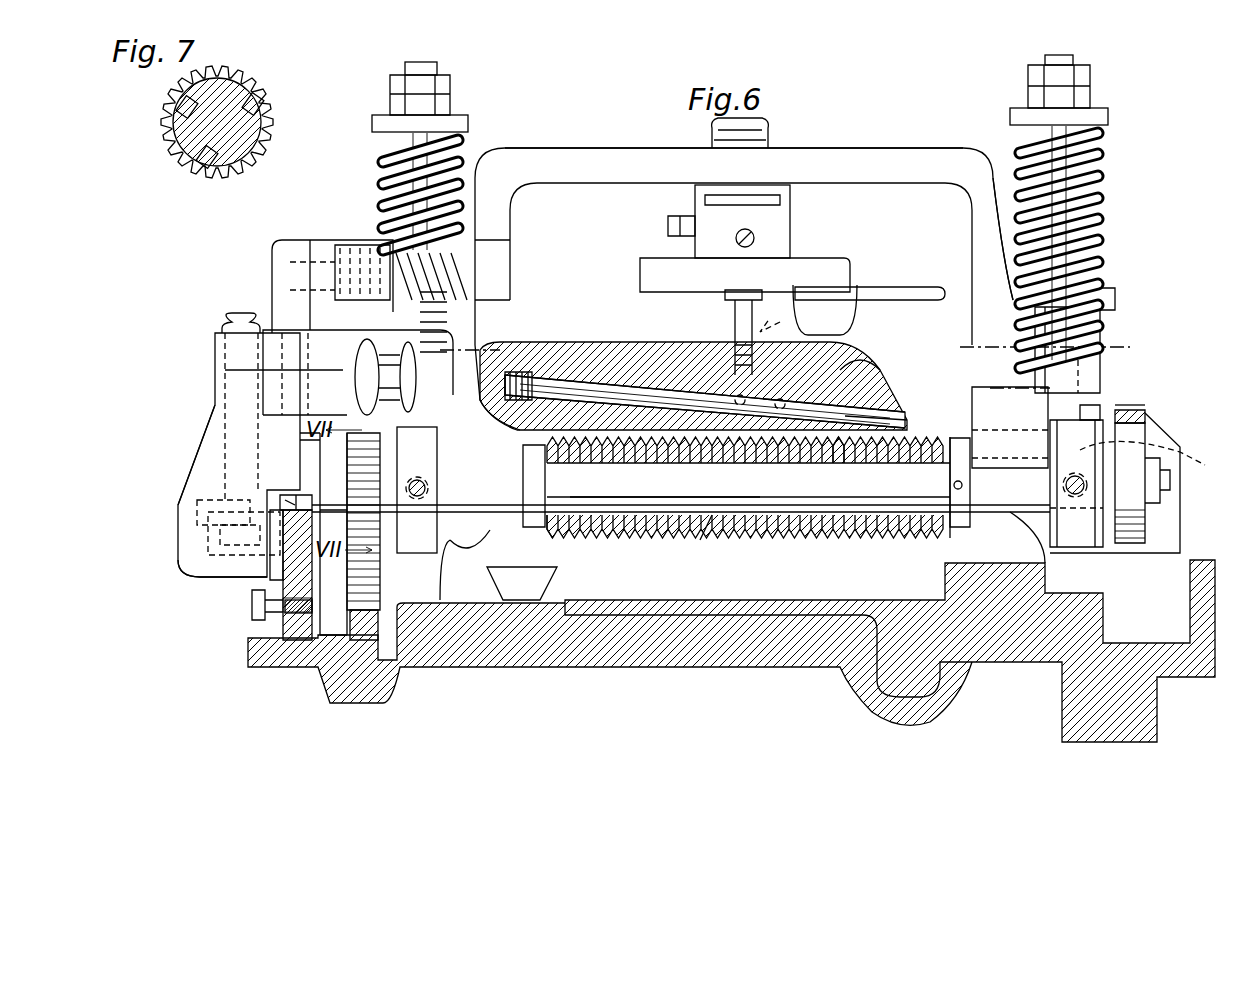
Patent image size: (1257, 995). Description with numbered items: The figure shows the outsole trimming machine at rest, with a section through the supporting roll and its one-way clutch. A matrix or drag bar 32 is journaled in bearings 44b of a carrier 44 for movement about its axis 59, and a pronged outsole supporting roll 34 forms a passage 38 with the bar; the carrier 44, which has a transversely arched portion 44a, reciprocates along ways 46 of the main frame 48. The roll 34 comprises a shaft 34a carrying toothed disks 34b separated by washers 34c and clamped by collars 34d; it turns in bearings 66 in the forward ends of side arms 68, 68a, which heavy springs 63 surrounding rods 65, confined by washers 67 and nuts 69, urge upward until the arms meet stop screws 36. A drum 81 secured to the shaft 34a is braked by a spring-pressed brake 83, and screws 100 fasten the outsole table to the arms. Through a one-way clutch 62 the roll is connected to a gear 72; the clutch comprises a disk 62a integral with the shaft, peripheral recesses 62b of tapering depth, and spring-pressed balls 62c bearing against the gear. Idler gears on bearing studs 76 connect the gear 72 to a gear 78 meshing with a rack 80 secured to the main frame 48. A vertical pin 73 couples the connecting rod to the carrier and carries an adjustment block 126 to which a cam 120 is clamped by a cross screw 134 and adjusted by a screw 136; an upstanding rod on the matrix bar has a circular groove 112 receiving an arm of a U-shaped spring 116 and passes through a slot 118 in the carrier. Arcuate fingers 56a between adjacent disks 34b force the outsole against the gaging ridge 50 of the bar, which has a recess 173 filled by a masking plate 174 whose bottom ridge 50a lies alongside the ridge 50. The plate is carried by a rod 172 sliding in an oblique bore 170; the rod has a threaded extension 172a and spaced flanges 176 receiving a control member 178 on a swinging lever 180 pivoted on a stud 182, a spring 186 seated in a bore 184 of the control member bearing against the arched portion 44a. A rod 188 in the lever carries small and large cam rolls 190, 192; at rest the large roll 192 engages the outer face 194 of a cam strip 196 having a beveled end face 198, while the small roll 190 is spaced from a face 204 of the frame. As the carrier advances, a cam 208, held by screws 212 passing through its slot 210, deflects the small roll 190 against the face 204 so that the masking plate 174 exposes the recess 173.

In FIG. 6, the matrix bar 32 is at (860, 348).
In FIG. 6, the pronged outsole supporting roll 34 is at (891, 556).
In FIG. 6, the shaft 34a is at (926, 490).
In FIG. 6, the toothed disks 34b is at (845, 540).
In FIG. 6, the washers 34c is at (632, 540).
In FIG. 6, the collars 34d is at (978, 528).
In FIG. 6, the stop screws 36 is at (498, 414).
In FIG. 6, the passage 38 is at (880, 416).
In FIG. 6, the carrier 44 is at (528, 320).
In FIG. 6, the transversely arched portion 44a is at (870, 150).
In FIG. 6, the bearings 44b is at (1008, 340).
In FIG. 6, the ways 46 is at (490, 578).
In FIG. 6, the main frame 48 is at (272, 668).
In FIG. 6, the gaging ridge 50 is at (600, 455).
In FIG. 6, the bottom ridge of the masking plate 50a is at (822, 455).
In FIG. 6, the arcuate fingers 56a is at (722, 540).
In FIG. 6, the axis 59 is at (985, 388).
In FIG. 7, the one-way clutch 62 is at (228, 92).
In FIG. 7, the disk 62a is at (232, 172).
In FIG. 7, the peripheral recesses 62b is at (268, 128).
In FIG. 7, the spring-pressed balls 62c is at (260, 104).
In FIG. 6, the heavy springs 63 is at (1090, 230).
In FIG. 6, the rods 65 is at (1090, 182).
In FIG. 6, the bearings 66 is at (1157, 458).
In FIG. 6, the washers 67 is at (1108, 118).
In FIG. 6, the side arm 68 is at (428, 556).
In FIG. 6, the side arm 68a is at (1150, 450).
In FIG. 6, the nuts 69 is at (1070, 100).
In FIG. 7, the gear 72 is at (196, 178).
In FIG. 6, the gear 72 is at (383, 465).
In FIG. 6, the vertical pin 73 is at (772, 128).
In FIG. 6, the bearing studs 76 is at (330, 450).
In FIG. 6, the gear 78 is at (347, 590).
In FIG. 6, the rack 80 is at (350, 616).
In FIG. 6, the drum 81 is at (1150, 520).
In FIG. 6, the spring-pressed brake 83 is at (1145, 418).
In FIG. 6, the screws 100 is at (416, 500).
In FIG. 6, the circular groove 112 is at (752, 292).
In FIG. 6, the U-shaped spring 116 is at (870, 296).
In FIG. 6, the slot 118 is at (790, 320).
In FIG. 6, the cam 120 is at (820, 280).
In FIG. 6, the adjustment block 126 is at (790, 198).
In FIG. 6, the cross screw 134 is at (668, 226).
In FIG. 6, the screw 136 is at (760, 230).
In FIG. 6, the oblique bore 170 is at (600, 385).
In FIG. 6, the rod 172 is at (650, 390).
In FIG. 6, the threaded extension 172a is at (432, 380).
In FIG. 6, the recess 173 is at (880, 372).
In FIG. 6, the masking plate 174 is at (740, 408).
In FIG. 6, the spaced flanges 176 is at (385, 400).
In FIG. 6, the control member 178 is at (330, 318).
In FIG. 6, the swinging lever 180 is at (220, 333).
In FIG. 6, the stud 182 is at (276, 318).
In FIG. 6, the bore 184 is at (345, 260).
In FIG. 6, the spring 186 is at (380, 260).
In FIG. 6, the rod 188 is at (208, 412).
In FIG. 6, the small cam roll 190 is at (210, 535).
In FIG. 6, the large cam roll 192 is at (197, 510).
In FIG. 6, the outer face 194 is at (280, 504).
In FIG. 6, the cam strip 196 is at (302, 494).
In FIG. 6, the beveled end face 198 is at (282, 485).
In FIG. 6, the face 204 is at (283, 546).
In FIG. 6, the cam 208 is at (180, 570).
In FIG. 6, the slot 210 is at (255, 624).
In FIG. 6, the screws 212 is at (252, 604).